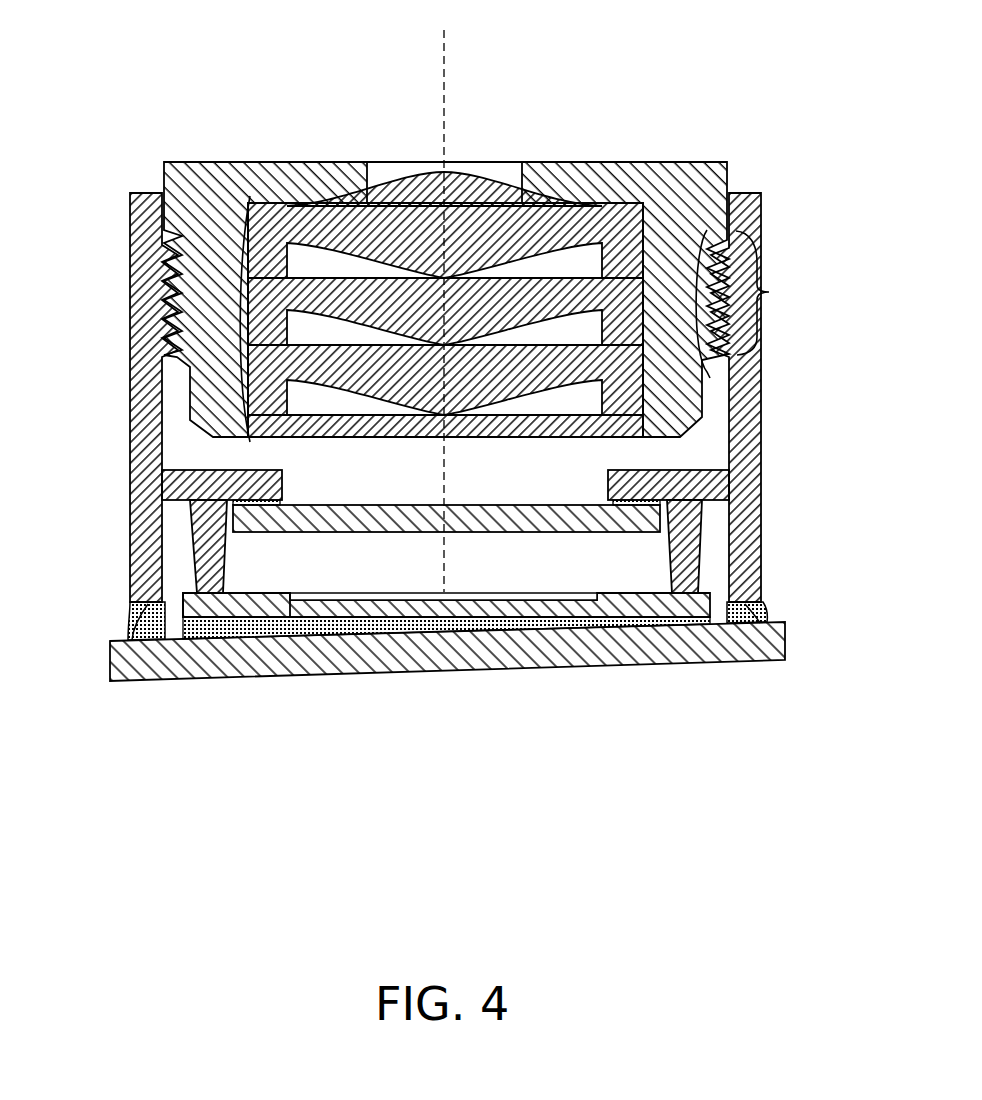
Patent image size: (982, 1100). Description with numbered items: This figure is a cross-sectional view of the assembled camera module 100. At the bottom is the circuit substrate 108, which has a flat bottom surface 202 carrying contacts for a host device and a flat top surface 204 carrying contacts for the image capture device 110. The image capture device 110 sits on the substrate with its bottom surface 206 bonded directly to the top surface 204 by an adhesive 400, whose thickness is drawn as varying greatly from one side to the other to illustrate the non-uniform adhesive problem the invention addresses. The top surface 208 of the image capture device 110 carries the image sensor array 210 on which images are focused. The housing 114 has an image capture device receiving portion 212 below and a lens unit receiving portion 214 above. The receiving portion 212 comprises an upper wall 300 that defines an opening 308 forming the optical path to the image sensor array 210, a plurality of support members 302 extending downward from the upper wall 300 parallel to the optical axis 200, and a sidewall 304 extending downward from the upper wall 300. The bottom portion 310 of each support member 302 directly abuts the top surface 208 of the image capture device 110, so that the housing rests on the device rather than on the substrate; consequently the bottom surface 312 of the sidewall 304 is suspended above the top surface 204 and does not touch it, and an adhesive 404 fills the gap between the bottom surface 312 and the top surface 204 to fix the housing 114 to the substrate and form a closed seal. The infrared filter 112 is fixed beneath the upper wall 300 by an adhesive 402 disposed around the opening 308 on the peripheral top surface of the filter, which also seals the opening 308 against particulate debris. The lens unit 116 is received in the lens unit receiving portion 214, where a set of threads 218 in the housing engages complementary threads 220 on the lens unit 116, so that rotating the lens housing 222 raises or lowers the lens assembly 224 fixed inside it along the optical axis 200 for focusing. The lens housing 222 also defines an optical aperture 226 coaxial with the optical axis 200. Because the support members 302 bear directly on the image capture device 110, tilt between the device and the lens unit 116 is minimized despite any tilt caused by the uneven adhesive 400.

The camera module 100 is at (186, 96).
The circuit substrate 108 is at (427, 662).
The image capture device 110 is at (363, 608).
The infrared filter 112 is at (421, 521).
The housing 114 is at (748, 382).
The lens unit 116 is at (412, 272).
The optical axis 200 is at (445, 63).
The bottom surface 202 is at (557, 672).
The top surface 204 is at (525, 618).
The bottom surface 206 is at (263, 620).
The top surface 208 is at (265, 593).
The image sensor array 210 is at (467, 593).
The image capture device receiving portion 212 is at (387, 508).
The lens unit receiving portion 214 is at (431, 397).
The threads 218 is at (769, 292).
The threads 220 is at (695, 303).
The lens housing 222 is at (673, 188).
The lens assembly 224 is at (239, 305).
The optical aperture 226 is at (477, 137).
The upper wall 300 is at (215, 471).
The support members 302 is at (214, 557).
The sidewall 304 is at (142, 568).
The opening 308 is at (528, 475).
The bottom portion 310 is at (212, 595).
The bottom surface 312 is at (142, 607).
The adhesive 400 is at (488, 628).
The adhesive 402 is at (262, 506).
The adhesive 404 is at (128, 618).